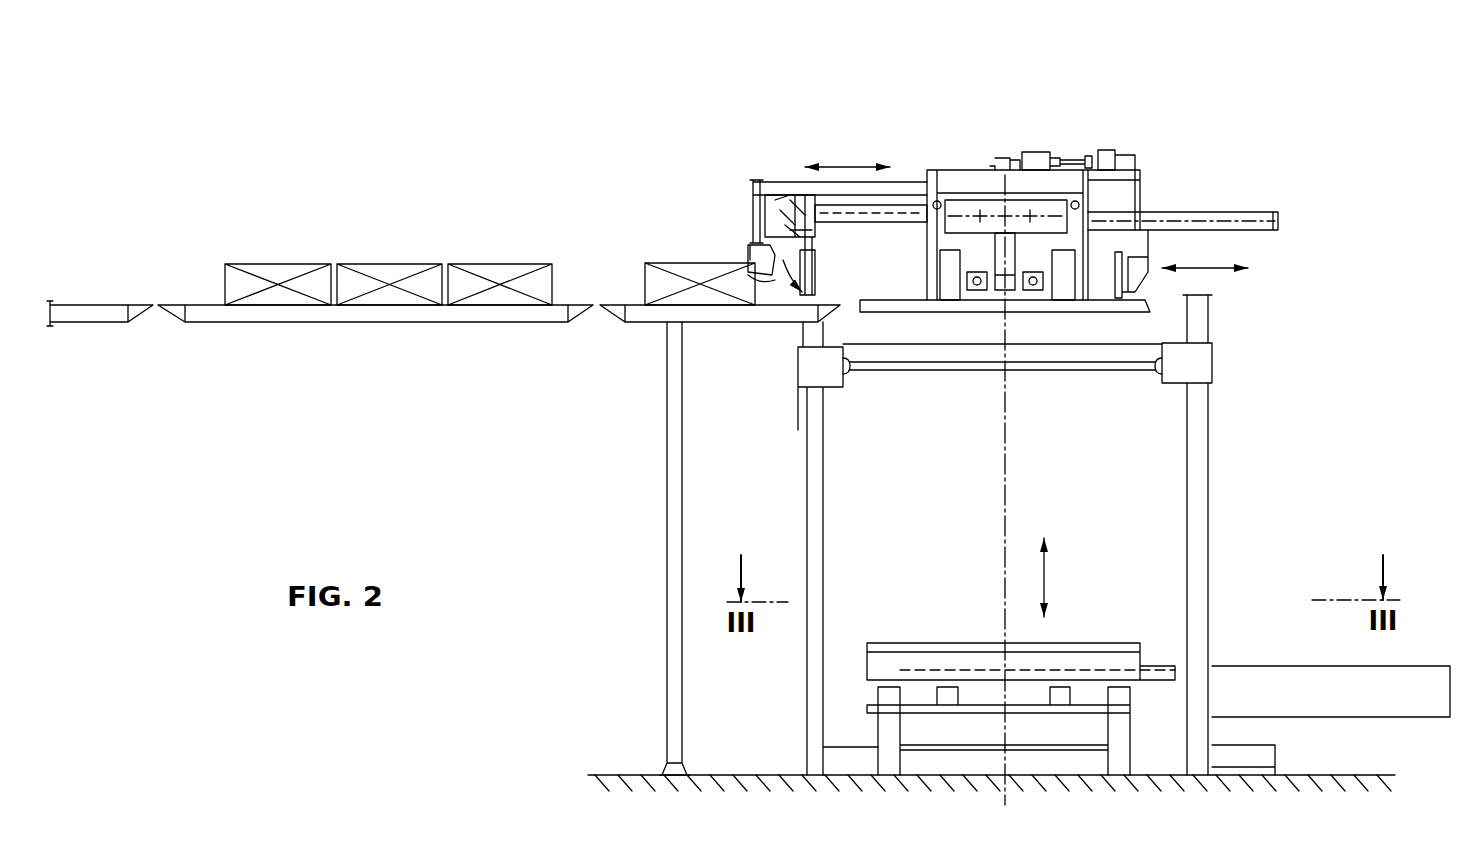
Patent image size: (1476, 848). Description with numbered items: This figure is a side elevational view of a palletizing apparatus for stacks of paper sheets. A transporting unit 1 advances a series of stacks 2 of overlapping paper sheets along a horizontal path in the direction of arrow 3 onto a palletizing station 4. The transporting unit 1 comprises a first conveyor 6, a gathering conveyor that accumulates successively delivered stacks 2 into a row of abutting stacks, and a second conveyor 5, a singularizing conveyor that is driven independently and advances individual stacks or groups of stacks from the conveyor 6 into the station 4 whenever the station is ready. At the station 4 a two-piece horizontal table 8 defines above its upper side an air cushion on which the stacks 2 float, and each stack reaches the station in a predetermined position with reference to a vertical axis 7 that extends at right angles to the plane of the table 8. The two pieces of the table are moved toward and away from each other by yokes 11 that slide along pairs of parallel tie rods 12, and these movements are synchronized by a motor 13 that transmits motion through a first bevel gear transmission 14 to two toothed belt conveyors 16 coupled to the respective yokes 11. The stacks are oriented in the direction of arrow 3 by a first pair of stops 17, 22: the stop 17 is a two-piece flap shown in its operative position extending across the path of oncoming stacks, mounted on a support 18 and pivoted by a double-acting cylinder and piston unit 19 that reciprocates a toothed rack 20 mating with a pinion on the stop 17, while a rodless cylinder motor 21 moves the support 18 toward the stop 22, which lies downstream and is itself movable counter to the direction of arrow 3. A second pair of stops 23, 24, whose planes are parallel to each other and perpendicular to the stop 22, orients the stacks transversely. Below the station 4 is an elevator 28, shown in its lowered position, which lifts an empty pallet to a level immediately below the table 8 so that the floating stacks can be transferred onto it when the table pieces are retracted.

The transporting unit 1 is at (217, 347).
The stacks 2 is at (315, 246).
The arrow 3 is at (330, 348).
The palletizing station 4 is at (975, 210).
The second conveyor 5 is at (740, 325).
The first conveyor 6 is at (473, 325).
The vertical axis 7 is at (1003, 471).
The horizontal table 8 is at (1162, 300).
The yokes 11 is at (925, 285).
The tie rods 12 is at (946, 190).
The motor 13 is at (1110, 155).
The first bevel gear transmission 14 is at (1040, 158).
The toothed belt conveyors 16 is at (1005, 158).
The stop 17 is at (818, 285).
The support 18 is at (813, 205).
The cylinder and piston unit 19 is at (765, 210).
The toothed rack 20 is at (797, 205).
The motor 21 is at (905, 182).
The stop 22 is at (1125, 268).
The stop 23 is at (1058, 300).
The stop 24 is at (1058, 300).
The elevator 28 is at (1104, 624).